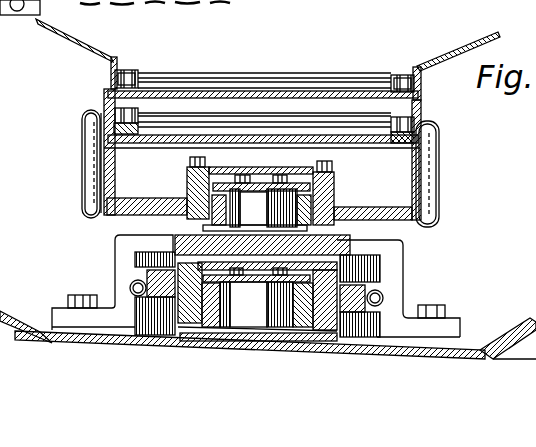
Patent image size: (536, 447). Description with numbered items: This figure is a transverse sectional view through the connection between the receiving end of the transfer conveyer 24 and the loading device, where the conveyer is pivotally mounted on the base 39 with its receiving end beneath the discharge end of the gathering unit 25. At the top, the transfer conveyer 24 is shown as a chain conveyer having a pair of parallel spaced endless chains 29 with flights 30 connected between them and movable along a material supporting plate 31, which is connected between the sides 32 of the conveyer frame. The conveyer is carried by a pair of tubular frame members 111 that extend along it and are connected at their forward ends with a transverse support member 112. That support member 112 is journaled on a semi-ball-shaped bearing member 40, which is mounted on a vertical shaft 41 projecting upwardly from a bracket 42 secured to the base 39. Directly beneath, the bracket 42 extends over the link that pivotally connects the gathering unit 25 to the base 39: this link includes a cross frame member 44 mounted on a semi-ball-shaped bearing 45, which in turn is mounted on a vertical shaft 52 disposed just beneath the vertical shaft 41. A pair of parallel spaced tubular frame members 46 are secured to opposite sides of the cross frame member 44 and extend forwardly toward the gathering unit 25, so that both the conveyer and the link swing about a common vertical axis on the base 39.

The transfer conveyer 24 is at (99, 44).
The gathering unit 25 is at (275, 339).
The endless chains 29 is at (142, 72).
The flights 30 is at (265, 65).
The material supporting plate 31 is at (278, 98).
The sides 32 is at (110, 78).
The base 39 is at (0, 304).
The semi-ball-shaped bearing member 40 is at (333, 185).
The vertical shaft 41 is at (240, 200).
The bracket 42 is at (122, 239).
The cross frame member 44 is at (345, 282).
The semi-ball-shaped bearing 45 is at (352, 250).
The tubular frame members 46 is at (130, 288).
The vertical shaft 52 is at (168, 251).
The tubular frame members 111 is at (82, 167).
The transverse support member 112 is at (135, 213).